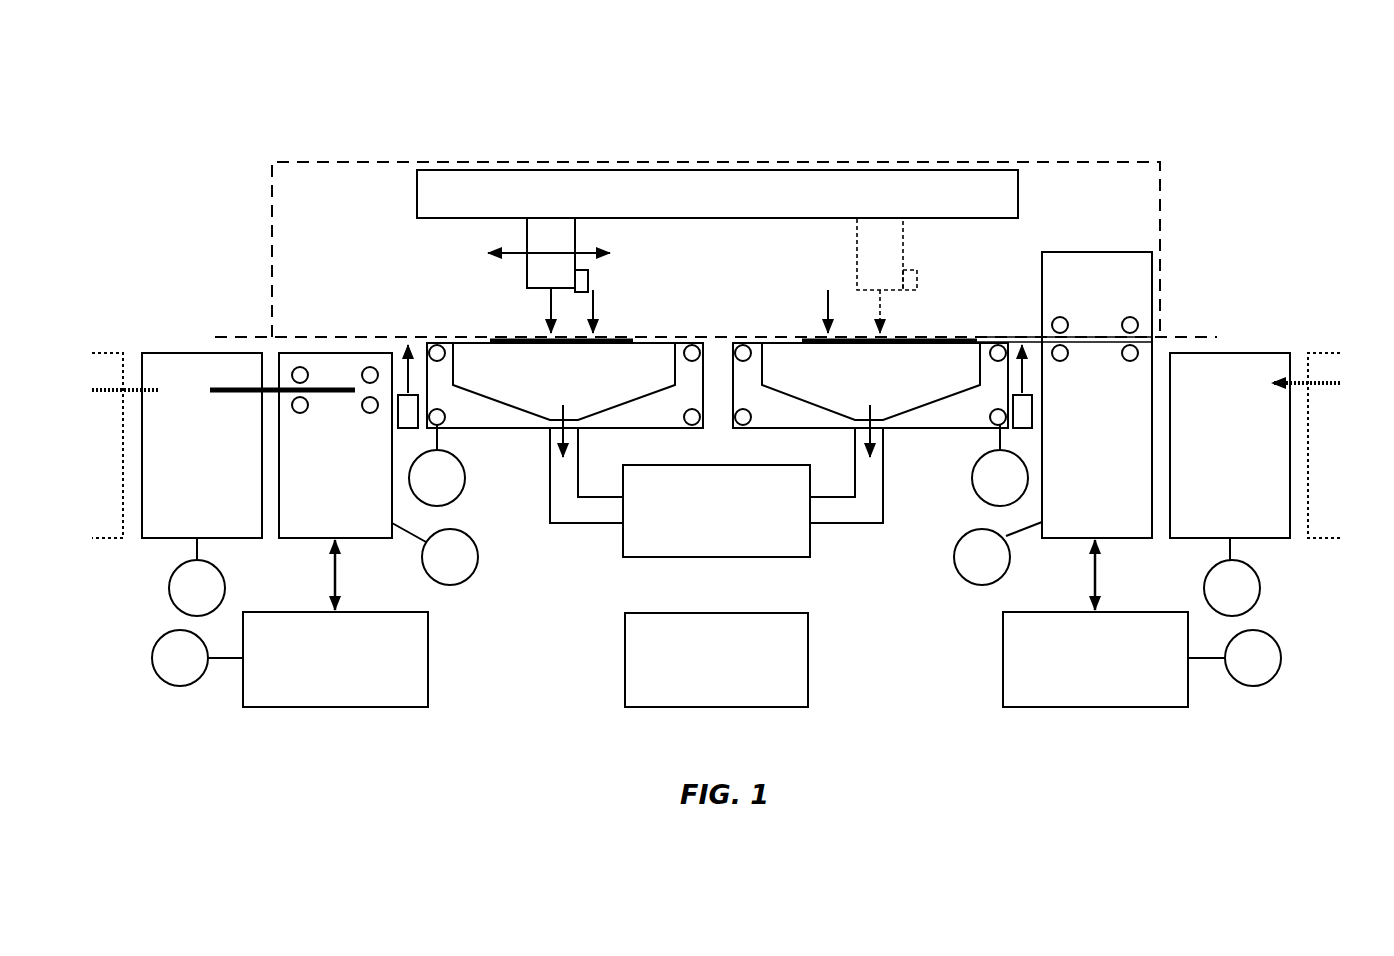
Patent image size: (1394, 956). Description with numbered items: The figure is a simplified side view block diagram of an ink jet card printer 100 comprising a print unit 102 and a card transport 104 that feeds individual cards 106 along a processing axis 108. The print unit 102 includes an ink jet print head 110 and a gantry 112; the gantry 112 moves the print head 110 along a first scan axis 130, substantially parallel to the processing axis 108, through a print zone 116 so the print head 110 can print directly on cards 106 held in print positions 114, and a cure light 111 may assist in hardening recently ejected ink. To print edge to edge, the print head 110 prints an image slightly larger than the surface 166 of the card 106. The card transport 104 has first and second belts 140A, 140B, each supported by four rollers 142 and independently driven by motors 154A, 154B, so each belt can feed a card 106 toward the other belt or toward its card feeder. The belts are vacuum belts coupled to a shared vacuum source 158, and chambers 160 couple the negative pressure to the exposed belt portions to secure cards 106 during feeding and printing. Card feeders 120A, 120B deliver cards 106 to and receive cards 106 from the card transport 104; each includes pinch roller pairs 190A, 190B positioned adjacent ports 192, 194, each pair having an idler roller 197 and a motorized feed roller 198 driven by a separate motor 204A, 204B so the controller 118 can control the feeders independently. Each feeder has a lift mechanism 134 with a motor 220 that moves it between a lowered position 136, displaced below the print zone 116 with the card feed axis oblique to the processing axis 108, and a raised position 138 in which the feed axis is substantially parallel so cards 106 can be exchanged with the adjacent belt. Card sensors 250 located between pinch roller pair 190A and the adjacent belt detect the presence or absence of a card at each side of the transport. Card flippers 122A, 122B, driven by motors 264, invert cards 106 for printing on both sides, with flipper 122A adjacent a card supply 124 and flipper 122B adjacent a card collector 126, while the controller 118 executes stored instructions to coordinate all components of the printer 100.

The ink jet card printer 100 is at (255, 103).
The print unit 102 is at (905, 147).
The card transport 104 is at (558, 560).
The card 106 is at (633, 338).
The processing axis 108 is at (243, 338).
The ink jet print head 110 is at (551, 230).
The cure light 111 is at (590, 280).
The gantry 112 is at (983, 185).
The print position 114 is at (490, 320).
The print zone 116 is at (1128, 160).
The controller 118 is at (803, 637).
The card feeder 120A is at (298, 543).
The card feeder 120B is at (1130, 542).
The card flipper 122A is at (168, 370).
The card flipper 122B is at (1225, 365).
The card supply 124 is at (106, 352).
The card collector 126 is at (1325, 353).
The first scan axis 130 is at (527, 253).
The lift mechanism 134 is at (428, 648).
The lowered position 136 is at (372, 562).
The raised position 138 is at (1145, 232).
The first belt 140A is at (640, 430).
The second belt 140B is at (800, 430).
The roller 142 is at (685, 355).
The motor 154A is at (458, 490).
The motor 154B is at (975, 490).
The vacuum source 158 is at (773, 548).
The chamber 160 is at (516, 390).
The surface 166 is at (594, 312).
The pinch roller pair 190A is at (370, 366).
The pinch roller pair 190B is at (300, 367).
The port 192 is at (385, 348).
The port 194 is at (262, 385).
The idler roller 197 is at (301, 366).
The motorized feed roller 198 is at (300, 414).
The motor 204A is at (470, 580).
The motor 204B is at (960, 577).
The motor 220 is at (153, 658).
The card sensor 250 is at (413, 407).
The motor 264 is at (168, 590).